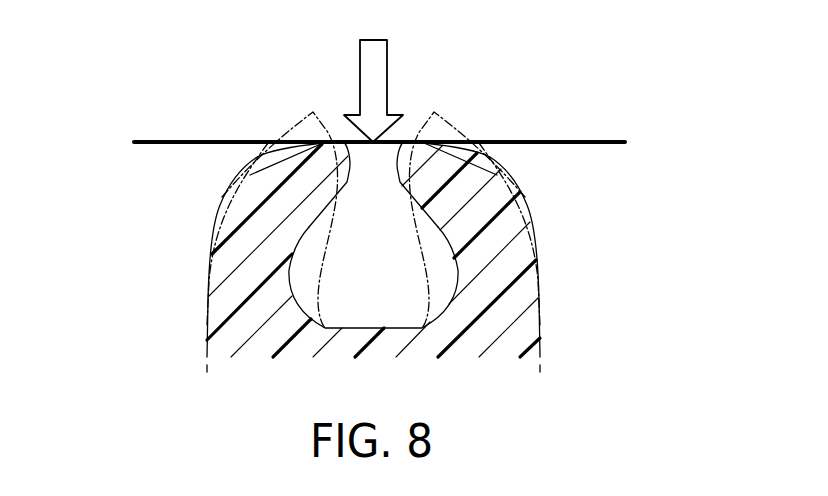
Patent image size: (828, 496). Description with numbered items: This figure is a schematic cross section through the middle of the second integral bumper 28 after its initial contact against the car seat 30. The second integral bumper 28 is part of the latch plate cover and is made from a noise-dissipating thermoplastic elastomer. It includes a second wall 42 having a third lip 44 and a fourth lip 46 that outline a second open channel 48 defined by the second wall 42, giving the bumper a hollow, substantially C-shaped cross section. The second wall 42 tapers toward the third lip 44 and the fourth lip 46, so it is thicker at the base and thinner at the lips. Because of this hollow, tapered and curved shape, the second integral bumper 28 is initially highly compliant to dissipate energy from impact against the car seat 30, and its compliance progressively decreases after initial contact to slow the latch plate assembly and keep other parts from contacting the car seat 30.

The second integral bumper 28 is at (357, 219).
The car seat 30 is at (593, 145).
The second wall 42 is at (543, 280).
The third lip 44 is at (349, 160).
The fourth lip 46 is at (399, 160).
The second open channel 48 is at (392, 327).